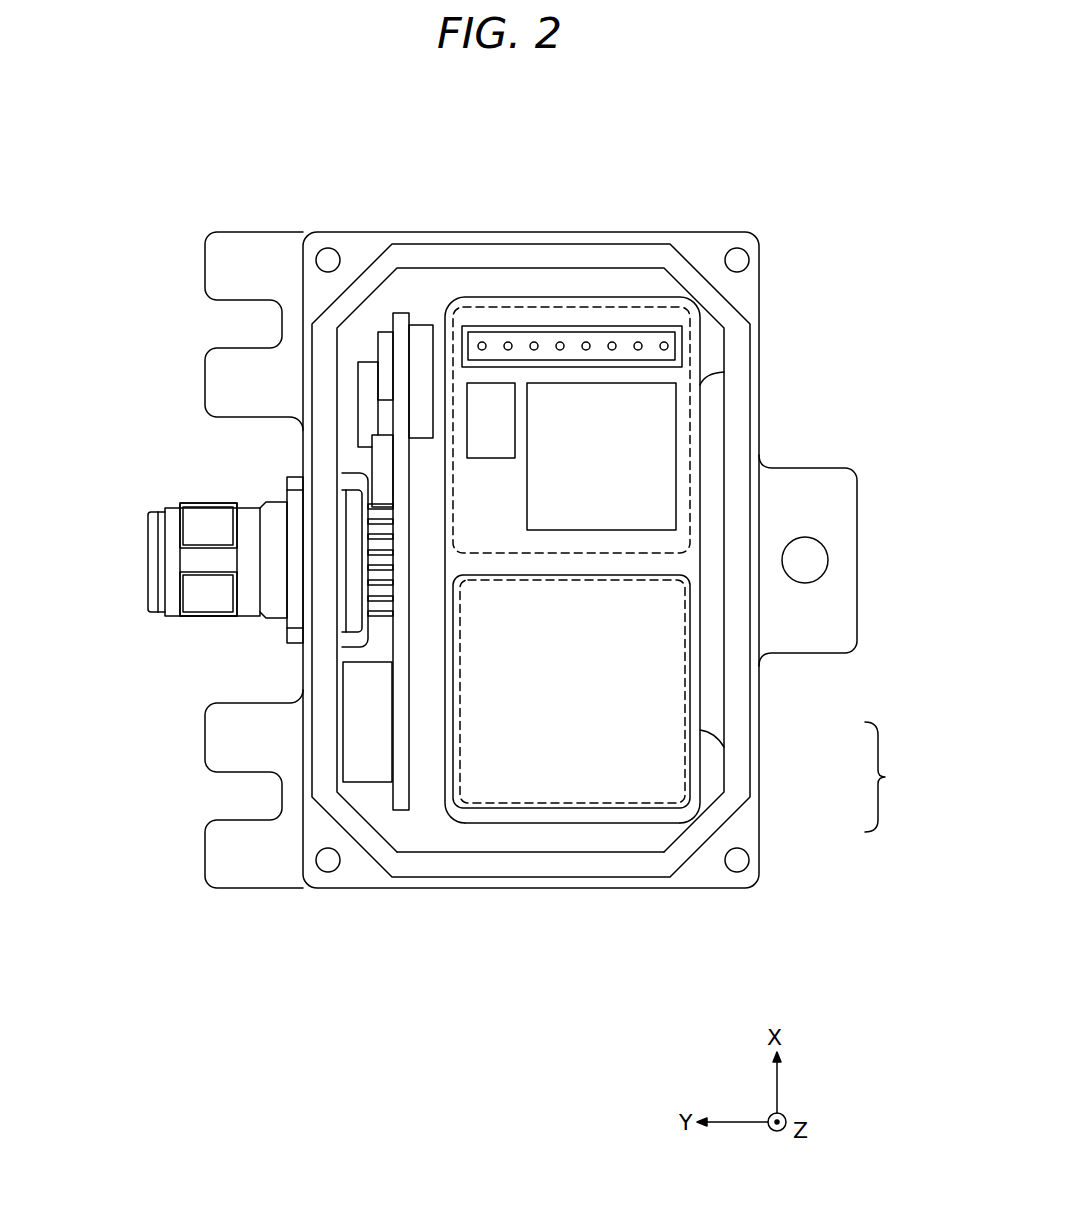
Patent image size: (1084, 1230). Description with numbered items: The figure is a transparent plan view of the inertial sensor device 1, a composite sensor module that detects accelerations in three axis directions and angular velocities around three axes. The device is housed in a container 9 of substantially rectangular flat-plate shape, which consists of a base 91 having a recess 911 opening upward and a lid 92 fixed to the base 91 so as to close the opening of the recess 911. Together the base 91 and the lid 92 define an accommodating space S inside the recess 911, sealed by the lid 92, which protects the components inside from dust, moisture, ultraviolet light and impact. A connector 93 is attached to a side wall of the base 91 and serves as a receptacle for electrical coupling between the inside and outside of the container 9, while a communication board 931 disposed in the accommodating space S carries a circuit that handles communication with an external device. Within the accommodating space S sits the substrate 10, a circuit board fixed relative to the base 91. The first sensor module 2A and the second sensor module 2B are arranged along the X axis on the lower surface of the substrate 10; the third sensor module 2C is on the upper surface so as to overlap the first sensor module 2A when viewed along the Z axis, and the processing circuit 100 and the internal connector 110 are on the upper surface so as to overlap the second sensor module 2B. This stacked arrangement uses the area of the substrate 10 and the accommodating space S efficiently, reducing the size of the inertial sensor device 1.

The inertial sensor device 1 is at (797, 135).
The container 9 is at (885, 777).
The base 91 is at (738, 832).
The lid 92 is at (738, 751).
The connector 93 is at (148, 557).
The communication board 931 is at (403, 790).
The recess 911 is at (490, 850).
The substrate 10 is at (563, 298).
The processing circuit 100 is at (622, 465).
The internal connector 110 is at (518, 326).
The first sensor module 2A is at (587, 745).
The second sensor module 2B is at (690, 403).
The third sensor module 2C is at (532, 813).
The accommodating space S is at (652, 837).